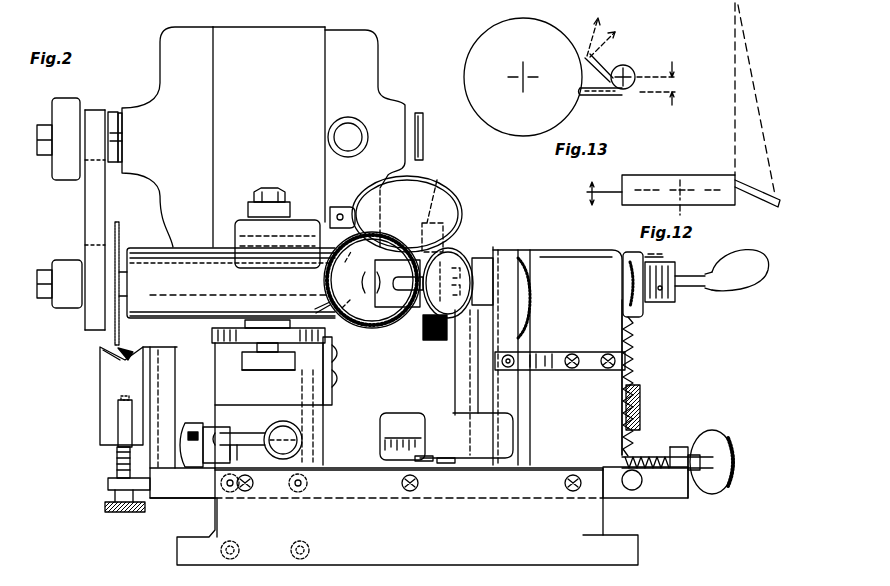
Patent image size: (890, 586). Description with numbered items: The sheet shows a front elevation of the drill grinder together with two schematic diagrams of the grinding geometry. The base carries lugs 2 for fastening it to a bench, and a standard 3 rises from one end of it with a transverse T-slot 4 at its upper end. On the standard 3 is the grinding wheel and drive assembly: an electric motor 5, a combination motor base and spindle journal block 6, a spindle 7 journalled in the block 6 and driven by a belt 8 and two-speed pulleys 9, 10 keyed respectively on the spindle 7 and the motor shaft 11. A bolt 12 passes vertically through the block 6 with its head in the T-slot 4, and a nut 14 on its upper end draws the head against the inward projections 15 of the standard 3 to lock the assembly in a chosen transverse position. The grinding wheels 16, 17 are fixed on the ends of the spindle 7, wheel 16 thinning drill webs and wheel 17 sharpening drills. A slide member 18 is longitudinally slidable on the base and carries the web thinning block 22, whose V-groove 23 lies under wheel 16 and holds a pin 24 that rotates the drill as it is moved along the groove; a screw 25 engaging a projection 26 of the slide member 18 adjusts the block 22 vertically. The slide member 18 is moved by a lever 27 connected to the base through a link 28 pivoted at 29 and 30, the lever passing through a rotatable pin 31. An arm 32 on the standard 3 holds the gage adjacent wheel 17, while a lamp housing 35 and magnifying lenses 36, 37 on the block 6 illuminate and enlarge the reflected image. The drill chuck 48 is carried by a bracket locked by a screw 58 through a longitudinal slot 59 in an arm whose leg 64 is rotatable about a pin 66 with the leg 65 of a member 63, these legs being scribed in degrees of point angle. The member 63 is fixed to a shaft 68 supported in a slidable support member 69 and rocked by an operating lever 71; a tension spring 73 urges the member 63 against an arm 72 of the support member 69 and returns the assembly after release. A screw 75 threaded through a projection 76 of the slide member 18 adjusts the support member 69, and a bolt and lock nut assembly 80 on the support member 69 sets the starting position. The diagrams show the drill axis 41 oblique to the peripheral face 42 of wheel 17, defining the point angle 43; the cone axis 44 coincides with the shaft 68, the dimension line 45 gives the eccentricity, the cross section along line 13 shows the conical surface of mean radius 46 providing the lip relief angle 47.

In FIG. 2, the lugs 2 is at (180, 551).
In FIG. 2, the standard 3 is at (214, 386).
In FIG. 2, the T-slot 4 is at (262, 369).
In FIG. 2, the electric motor 5 is at (360, 86).
In FIG. 2, the combination motor base and spindle journal block 6 is at (174, 257).
In FIG. 2, the spindle 7 is at (123, 297).
In FIG. 2, the belt 8 is at (90, 207).
In FIG. 2, the two-speed pulley 9 is at (80, 317).
In FIG. 2, the two-speed pulley 10 is at (108, 113).
In FIG. 2, the motor shaft 11 is at (122, 137).
In FIG. 2, the bolt 12 is at (242, 360).
In FIG. 12, the section line 13— 13 is at (780, 165).
In FIG. 2, the nut 14 is at (283, 208).
In FIG. 2, the inward projections 15 is at (248, 343).
In FIG. 2, the grinding wheel 16 is at (119, 242).
In FIG. 2, the grinding wheel 17 is at (432, 201).
In FIG. 13, the grinding wheel 17 is at (482, 36).
In FIG. 12, the grinding wheel 17 is at (648, 190).
In FIG. 2, the slide member 18 is at (623, 491).
In FIG. 2, the block 22 is at (100, 405).
In FIG. 2, the V-groove 23 is at (127, 356).
In FIG. 2, the pin 24 is at (120, 358).
In FIG. 2, the screw 25 is at (118, 513).
In FIG. 2, the projection 26 is at (108, 484).
In FIG. 2, the lever 27 is at (401, 516).
In FIG. 2, the link 28 is at (182, 483).
In FIG. 2, the pivot 29 is at (190, 423).
In FIG. 2, the pivot 30 is at (300, 440).
In FIG. 2, the pin 31 is at (264, 443).
In FIG. 2, the arm 32 is at (335, 360).
In FIG. 2, the lamp housing 35 is at (300, 267).
In FIG. 2, the magnifying lens 36 is at (450, 188).
In FIG. 2, the magnifying lens 37 is at (462, 231).
In FIG. 13, the drill axis 41 is at (645, 92).
In FIG. 12, the drill axis 41 is at (775, 209).
In FIG. 13, the peripheral face 42 is at (572, 21).
In FIG. 12, the peripheral face 42 is at (733, 180).
In FIG. 12, the point angle 43 is at (740, 212).
In FIG. 12, the cone axis 44 is at (752, 80).
In FIG. 13, the dimension line 45 is at (656, 73).
In FIG. 12, the dimension line 45 is at (741, 204).
In FIG. 12, the mean radius 46 is at (755, 168).
In FIG. 13, the lip relief angle 47 is at (608, 31).
In FIG. 2, the drill chuck 48 is at (391, 322).
In FIG. 2, the screw 58 is at (465, 318).
In FIG. 2, the longitudinal slot 59 is at (416, 338).
In FIG. 2, the member 63 is at (508, 333).
In FIG. 2, the leg 64 is at (397, 422).
In FIG. 2, the leg 65 is at (482, 452).
In FIG. 2, the pin 66 is at (446, 463).
In FIG. 2, the shaft 68 is at (655, 305).
In FIG. 2, the support member 69 is at (630, 390).
In FIG. 2, the operating lever 71 is at (700, 277).
In FIG. 2, the arm 72 is at (541, 355).
In FIG. 2, the tension spring 73 is at (635, 352).
In FIG. 2, the screw 75 is at (735, 464).
In FIG. 2, the projection 76 is at (684, 491).
In FIG. 2, the bolt and lock nut assembly 80 is at (641, 412).